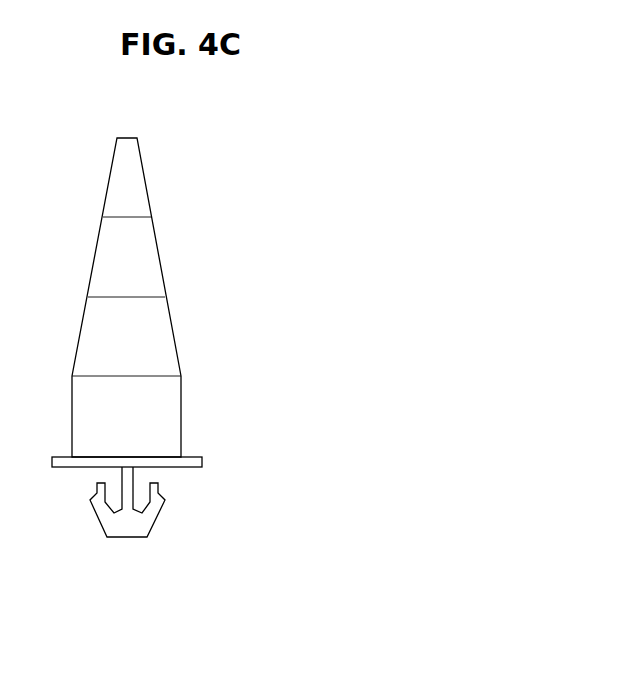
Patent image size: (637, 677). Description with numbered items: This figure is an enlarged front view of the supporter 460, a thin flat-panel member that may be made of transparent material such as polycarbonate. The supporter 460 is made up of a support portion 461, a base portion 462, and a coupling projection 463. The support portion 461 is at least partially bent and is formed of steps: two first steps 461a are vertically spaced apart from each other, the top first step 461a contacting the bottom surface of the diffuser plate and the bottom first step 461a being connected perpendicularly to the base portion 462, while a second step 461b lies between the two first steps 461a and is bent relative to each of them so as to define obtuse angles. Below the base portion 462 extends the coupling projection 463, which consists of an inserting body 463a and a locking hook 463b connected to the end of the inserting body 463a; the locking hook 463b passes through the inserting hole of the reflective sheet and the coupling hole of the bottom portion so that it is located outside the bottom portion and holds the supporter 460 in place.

The supporter 460 is at (73, 130).
The support portion 461 is at (267, 183).
The first step 461a is at (127, 182).
The second step 461b is at (140, 265).
The base portion 462 is at (190, 463).
The coupling projection 463 is at (139, 553).
The inserting body 463a is at (126, 490).
The locking hook 463b is at (150, 515).